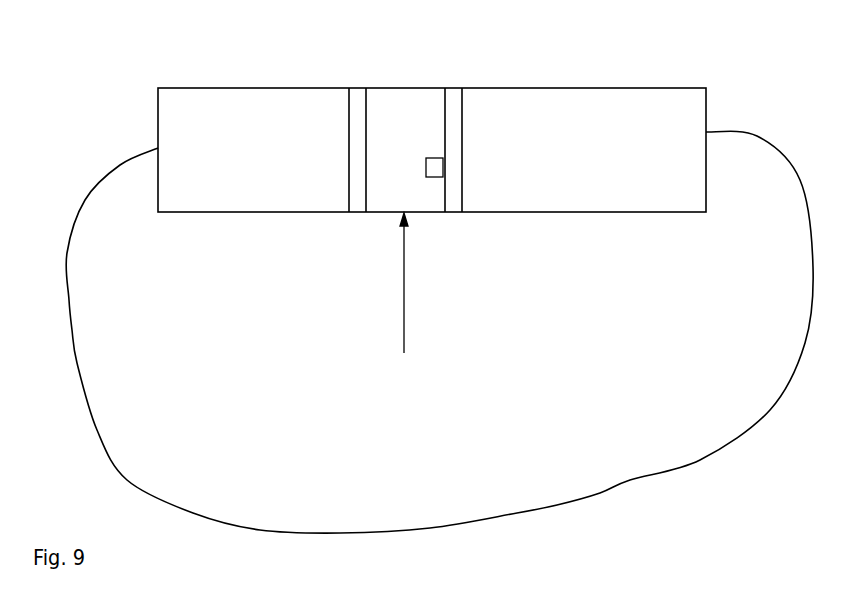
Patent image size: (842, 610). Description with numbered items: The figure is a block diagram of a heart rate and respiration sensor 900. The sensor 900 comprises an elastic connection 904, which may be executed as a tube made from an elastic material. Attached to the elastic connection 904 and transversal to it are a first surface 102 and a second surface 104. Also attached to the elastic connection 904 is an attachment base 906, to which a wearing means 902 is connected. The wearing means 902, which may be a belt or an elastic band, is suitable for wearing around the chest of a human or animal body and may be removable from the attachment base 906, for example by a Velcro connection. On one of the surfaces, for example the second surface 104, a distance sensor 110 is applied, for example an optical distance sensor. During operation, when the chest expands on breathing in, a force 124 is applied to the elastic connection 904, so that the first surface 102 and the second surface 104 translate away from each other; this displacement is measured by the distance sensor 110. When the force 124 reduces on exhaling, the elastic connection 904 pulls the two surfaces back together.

The heart rate and respiration sensor 900 is at (733, 52).
The wearing means 902 is at (557, 505).
The elastic connection 904 is at (383, 88).
The attachment base 906 is at (571, 88).
The first surface 102 is at (358, 143).
The second surface 104 is at (453, 110).
The distance sensor 110 is at (440, 167).
The force 124 is at (404, 297).